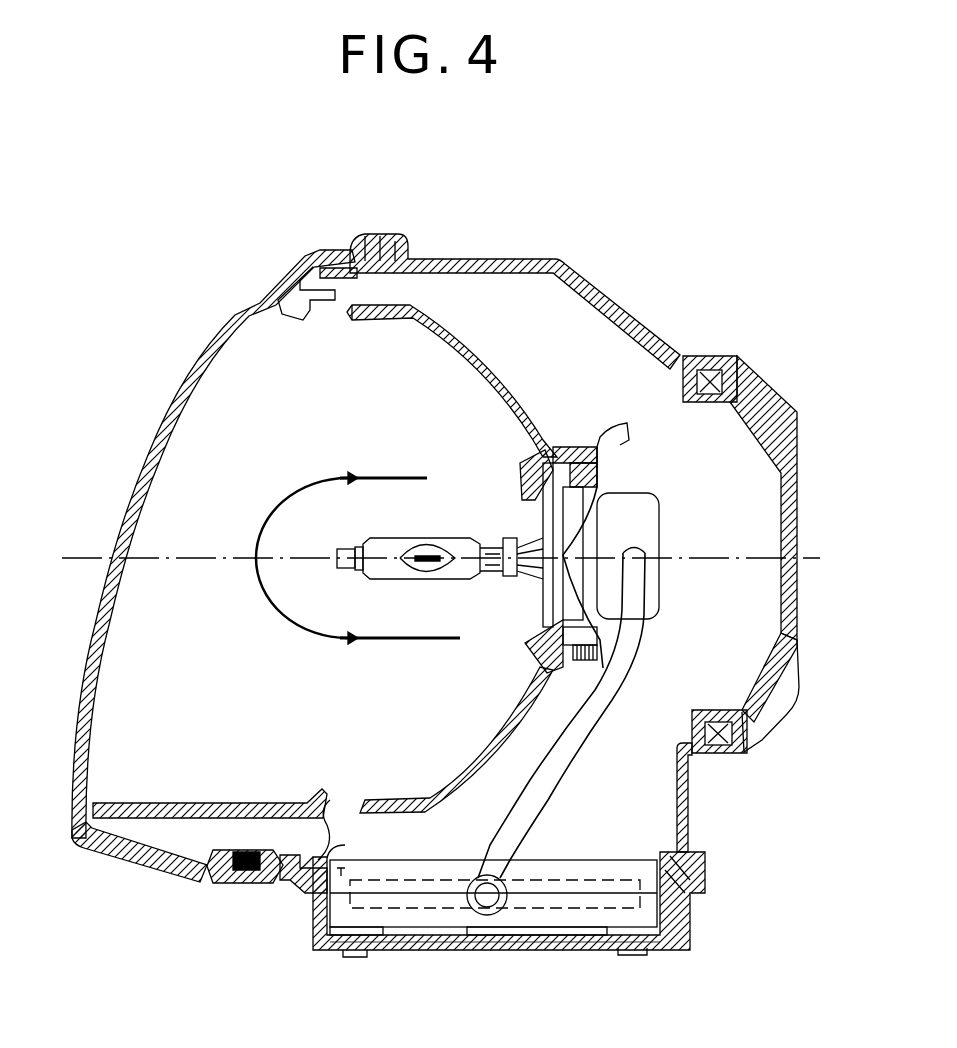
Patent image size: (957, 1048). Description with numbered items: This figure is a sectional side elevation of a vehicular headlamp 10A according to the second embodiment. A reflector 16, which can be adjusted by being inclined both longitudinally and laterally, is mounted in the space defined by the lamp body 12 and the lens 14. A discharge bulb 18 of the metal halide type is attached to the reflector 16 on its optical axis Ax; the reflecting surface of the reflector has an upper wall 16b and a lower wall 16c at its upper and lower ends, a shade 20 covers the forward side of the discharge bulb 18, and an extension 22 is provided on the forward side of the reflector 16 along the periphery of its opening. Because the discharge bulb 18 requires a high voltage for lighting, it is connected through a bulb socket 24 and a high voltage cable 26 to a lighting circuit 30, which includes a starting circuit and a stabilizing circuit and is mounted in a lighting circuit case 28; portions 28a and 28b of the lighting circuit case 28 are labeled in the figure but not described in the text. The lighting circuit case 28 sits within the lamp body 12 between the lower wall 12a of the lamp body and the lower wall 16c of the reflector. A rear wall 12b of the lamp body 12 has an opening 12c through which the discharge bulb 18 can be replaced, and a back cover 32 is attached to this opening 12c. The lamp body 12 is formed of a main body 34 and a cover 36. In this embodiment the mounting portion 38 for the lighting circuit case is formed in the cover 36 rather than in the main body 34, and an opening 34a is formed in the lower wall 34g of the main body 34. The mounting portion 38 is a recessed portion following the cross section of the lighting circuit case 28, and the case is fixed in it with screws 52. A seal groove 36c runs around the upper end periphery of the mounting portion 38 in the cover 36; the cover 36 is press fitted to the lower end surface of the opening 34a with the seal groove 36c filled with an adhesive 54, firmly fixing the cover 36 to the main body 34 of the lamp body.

The vehicular headlamp 10A is at (608, 242).
The lamp body 12 is at (647, 320).
The lower wall of the lamp body 12a is at (440, 952).
The rear wall of the lamp body 12b is at (690, 787).
The opening 12c is at (705, 403).
The lens 14 is at (218, 330).
The reflector 16 is at (533, 401).
The upper wall 16b is at (370, 321).
The lower wall 16c is at (395, 797).
The discharge bulb 18 is at (456, 535).
The shade 20 is at (300, 478).
The extension 22 is at (296, 314).
The bulb socket 24 is at (662, 499).
The high voltage cable 26 is at (600, 709).
The lighting circuit case 28 is at (606, 849).
The grommet of lighting circuit unit 28a is at (462, 886).
The mounting plate of lighting circuit unit 28b is at (480, 949).
The lighting circuit 30 is at (540, 878).
The back cover 32 is at (800, 510).
The main body of the lamp body 34 is at (700, 838).
The opening 34a is at (322, 812).
The lower wall of the main body 34g is at (272, 879).
The cover 36 is at (685, 947).
The seal groove 36c is at (300, 890).
The mounting portion for the lighting circuit case 38 is at (305, 942).
The screws 52 is at (350, 957).
The adhesive 54 is at (330, 857).
The optical axis Ax is at (78, 553).